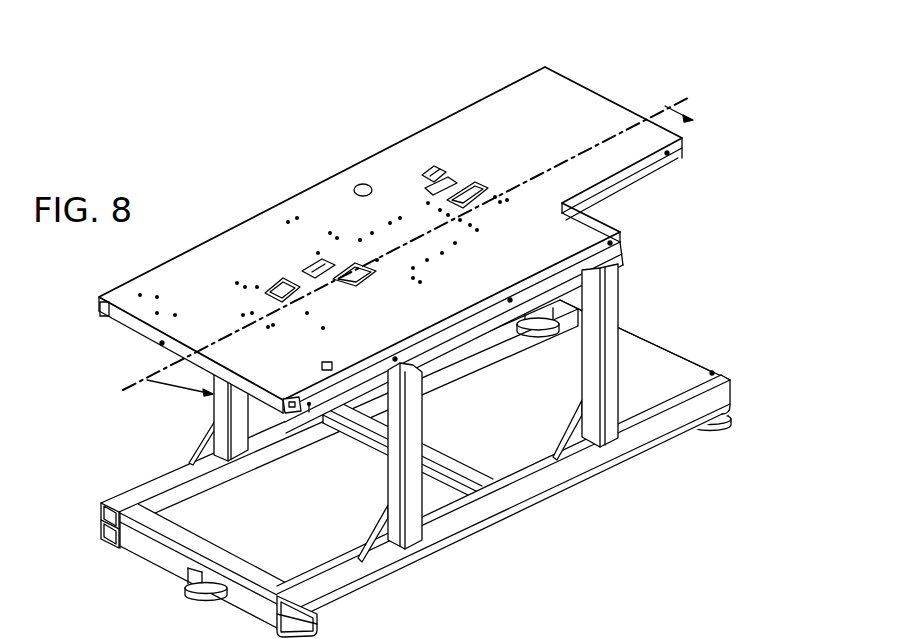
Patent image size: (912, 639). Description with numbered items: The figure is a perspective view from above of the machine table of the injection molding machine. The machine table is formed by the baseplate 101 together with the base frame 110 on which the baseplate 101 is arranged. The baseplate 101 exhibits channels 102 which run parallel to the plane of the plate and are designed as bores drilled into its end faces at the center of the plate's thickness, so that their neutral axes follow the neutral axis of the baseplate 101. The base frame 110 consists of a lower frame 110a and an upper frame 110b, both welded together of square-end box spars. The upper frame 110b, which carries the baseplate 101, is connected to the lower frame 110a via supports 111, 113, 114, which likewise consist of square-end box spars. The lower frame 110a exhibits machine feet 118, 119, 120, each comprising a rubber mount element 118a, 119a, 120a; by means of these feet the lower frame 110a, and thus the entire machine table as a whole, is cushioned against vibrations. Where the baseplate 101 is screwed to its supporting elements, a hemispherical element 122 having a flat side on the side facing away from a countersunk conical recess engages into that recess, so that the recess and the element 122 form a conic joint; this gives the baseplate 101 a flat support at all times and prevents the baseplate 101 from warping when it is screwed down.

The baseplate 101 is at (453, 223).
The channels 102 is at (280, 441).
The base frame 110 is at (430, 451).
The lower frame 110a is at (574, 464).
The upper frame 110b is at (622, 257).
The support 111 is at (213, 396).
The support 113 is at (620, 333).
The support 114 is at (489, 476).
The machine foot 118 is at (192, 603).
The rubber mount element 118a is at (183, 580).
The machine foot 119 is at (543, 343).
The rubber mount element 119a is at (528, 330).
The machine foot 120 is at (717, 427).
The rubber mount element 120a is at (733, 401).
The hemispherical element 122 is at (452, 187).